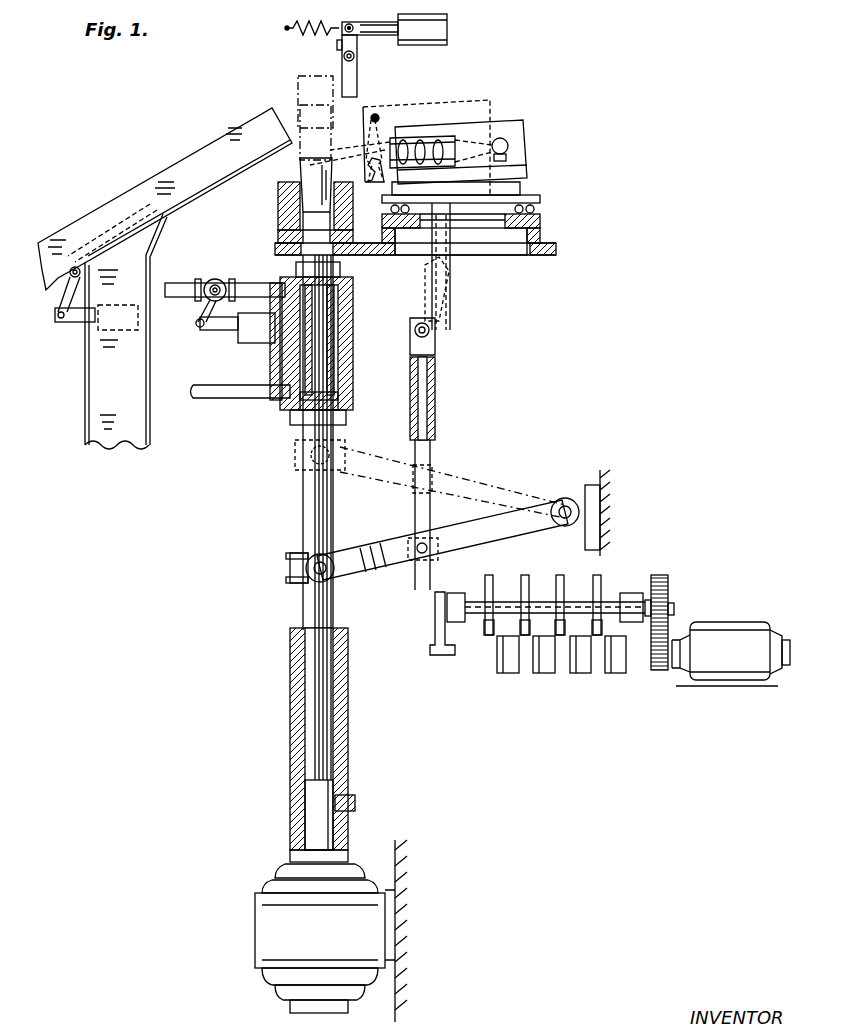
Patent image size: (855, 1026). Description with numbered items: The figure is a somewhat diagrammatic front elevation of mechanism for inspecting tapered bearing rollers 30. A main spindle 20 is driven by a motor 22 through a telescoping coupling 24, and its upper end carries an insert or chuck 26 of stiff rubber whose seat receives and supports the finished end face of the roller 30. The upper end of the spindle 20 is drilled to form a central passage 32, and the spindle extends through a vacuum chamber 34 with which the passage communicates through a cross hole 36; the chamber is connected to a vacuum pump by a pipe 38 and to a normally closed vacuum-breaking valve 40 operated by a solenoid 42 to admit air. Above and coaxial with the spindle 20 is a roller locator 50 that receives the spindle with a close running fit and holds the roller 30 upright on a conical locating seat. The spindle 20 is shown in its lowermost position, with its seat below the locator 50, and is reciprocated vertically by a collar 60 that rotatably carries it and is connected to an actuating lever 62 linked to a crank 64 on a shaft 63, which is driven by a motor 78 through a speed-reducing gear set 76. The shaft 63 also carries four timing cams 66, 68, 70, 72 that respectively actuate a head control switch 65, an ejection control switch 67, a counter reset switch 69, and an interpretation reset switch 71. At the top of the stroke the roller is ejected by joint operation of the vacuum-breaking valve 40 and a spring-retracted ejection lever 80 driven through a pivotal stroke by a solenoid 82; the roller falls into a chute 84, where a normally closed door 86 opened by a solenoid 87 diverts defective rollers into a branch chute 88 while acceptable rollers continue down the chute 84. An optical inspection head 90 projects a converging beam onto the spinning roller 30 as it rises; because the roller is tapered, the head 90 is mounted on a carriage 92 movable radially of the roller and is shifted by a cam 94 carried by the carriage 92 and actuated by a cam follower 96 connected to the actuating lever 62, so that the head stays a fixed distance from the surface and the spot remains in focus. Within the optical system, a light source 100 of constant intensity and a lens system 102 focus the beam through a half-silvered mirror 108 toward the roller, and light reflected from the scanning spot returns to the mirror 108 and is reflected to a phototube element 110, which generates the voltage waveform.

The main spindle 20 is at (303, 522).
The motor 22 is at (331, 931).
The telescoping coupling 24 is at (290, 716).
The insert or chuck 26 is at (296, 251).
The tapered bearing roller 30 is at (300, 170).
The central passage 32 is at (318, 362).
The vacuum chamber 34 is at (353, 378).
The cross hole 36 is at (338, 400).
The pipe 38 is at (262, 400).
The vacuum-breaking valve 40 is at (214, 282).
The solenoid 42 is at (256, 344).
The roller locator 50 is at (278, 200).
The collar 60 is at (292, 570).
The actuating lever 62 is at (458, 526).
The shaft 63 is at (472, 601).
The crank 64 is at (440, 655).
The head control switch 65 is at (509, 673).
The timing cam 66 is at (490, 575).
The ejection control switch 67 is at (545, 673).
The timing cam 68 is at (527, 575).
The counter reset switch 69 is at (582, 673).
The timing cam 70 is at (562, 575).
The interpretation reset switch 71 is at (618, 673).
The timing cam 72 is at (599, 575).
The speed-reducing gear set 76 is at (668, 605).
The motor 78 is at (731, 654).
The ejection lever 80 is at (357, 76).
The solenoid 82 is at (447, 32).
The chute 84 is at (218, 140).
The door 86 is at (138, 228).
The solenoid 87 is at (86, 332).
The branch chute 88 is at (126, 331).
The optical inspection head 90 is at (505, 124).
The carriage 92 is at (525, 200).
The cam 94 is at (450, 330).
The cam follower 96 is at (408, 322).
The light source 100 is at (508, 146).
The lens system 102 is at (440, 145).
The half-silvered mirror 108 is at (376, 176).
The phototube element 110 is at (383, 116).